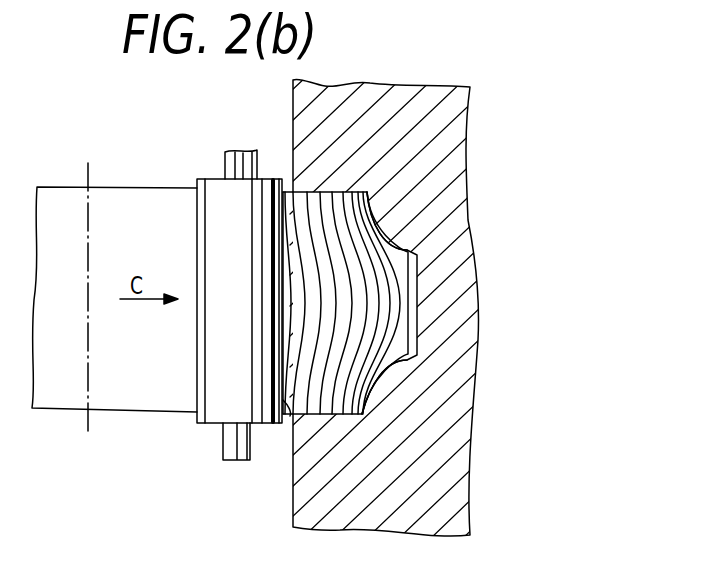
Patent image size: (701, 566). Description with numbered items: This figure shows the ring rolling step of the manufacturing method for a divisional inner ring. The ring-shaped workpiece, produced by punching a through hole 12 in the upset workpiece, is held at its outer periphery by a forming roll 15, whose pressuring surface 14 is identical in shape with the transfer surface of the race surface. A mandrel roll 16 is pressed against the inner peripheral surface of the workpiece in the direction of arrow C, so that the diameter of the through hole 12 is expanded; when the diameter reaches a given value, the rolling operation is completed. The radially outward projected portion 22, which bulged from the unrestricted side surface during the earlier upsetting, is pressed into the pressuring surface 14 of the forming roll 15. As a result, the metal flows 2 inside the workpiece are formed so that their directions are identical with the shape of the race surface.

The metal flows 2 is at (380, 343).
The through hole 12 is at (290, 415).
The pressuring surface 14 is at (372, 220).
The forming roll 15 is at (468, 240).
The mandrel roll 16 is at (217, 200).
The projected portion 22 is at (413, 290).